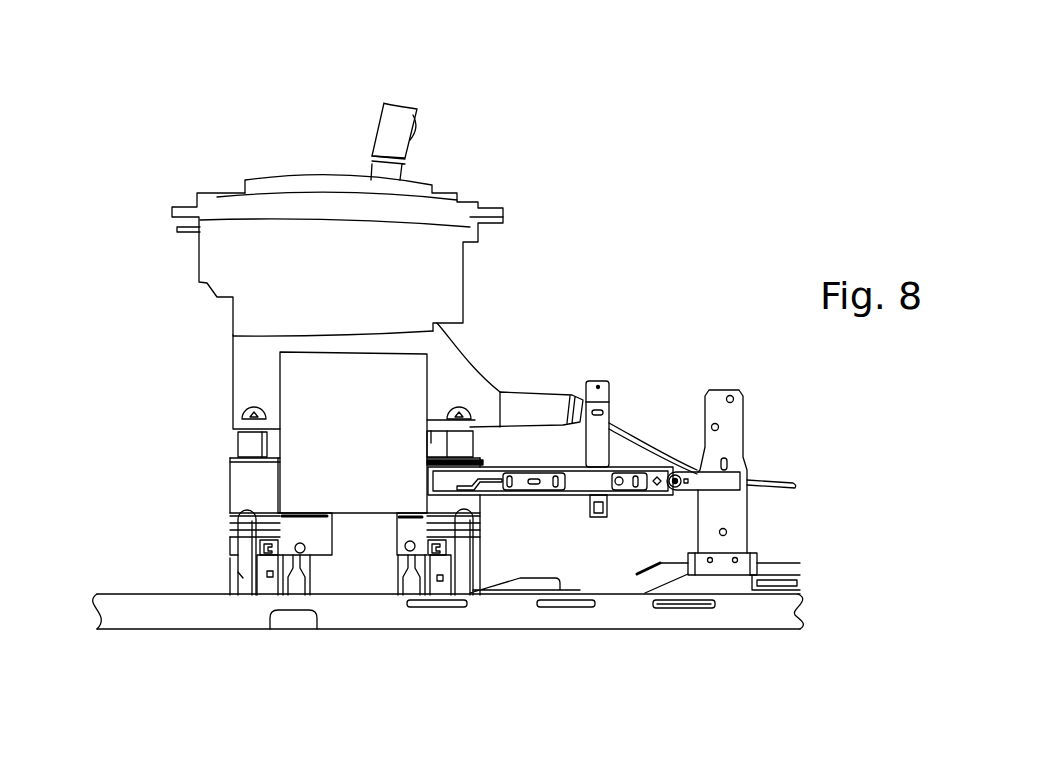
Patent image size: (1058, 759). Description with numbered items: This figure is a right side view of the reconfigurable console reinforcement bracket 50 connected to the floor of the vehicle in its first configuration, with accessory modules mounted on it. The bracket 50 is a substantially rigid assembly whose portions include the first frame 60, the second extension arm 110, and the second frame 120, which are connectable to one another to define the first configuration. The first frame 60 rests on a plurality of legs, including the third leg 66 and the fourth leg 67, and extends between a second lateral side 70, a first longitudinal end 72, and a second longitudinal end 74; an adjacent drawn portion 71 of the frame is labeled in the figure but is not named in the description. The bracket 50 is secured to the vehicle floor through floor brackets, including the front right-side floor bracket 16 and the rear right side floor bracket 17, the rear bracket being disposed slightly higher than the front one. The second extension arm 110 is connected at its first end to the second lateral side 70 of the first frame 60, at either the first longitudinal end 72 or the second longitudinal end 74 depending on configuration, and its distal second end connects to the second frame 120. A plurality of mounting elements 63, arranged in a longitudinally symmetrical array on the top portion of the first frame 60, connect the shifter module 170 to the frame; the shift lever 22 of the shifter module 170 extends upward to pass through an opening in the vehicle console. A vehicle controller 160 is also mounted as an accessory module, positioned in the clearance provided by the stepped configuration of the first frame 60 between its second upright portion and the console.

The front right-side floor bracket 16 is at (462, 590).
The rear right side floor bracket 17 is at (312, 577).
The shift lever 22 is at (398, 103).
The bracket 50 is at (627, 366).
The first frame 60 is at (225, 553).
The mounting elements 63 is at (237, 445).
The third leg 66 is at (460, 563).
The fourth leg 67 is at (230, 583).
The second lateral side 70 is at (235, 507).
The side block 71 is at (240, 490).
The first longitudinal end 72 is at (481, 498).
The second longitudinal end 74 is at (230, 477).
The second extension arm 110 is at (627, 494).
The second frame 120 is at (600, 381).
The vehicle controller 160 is at (278, 388).
The shifter module 170 is at (197, 280).